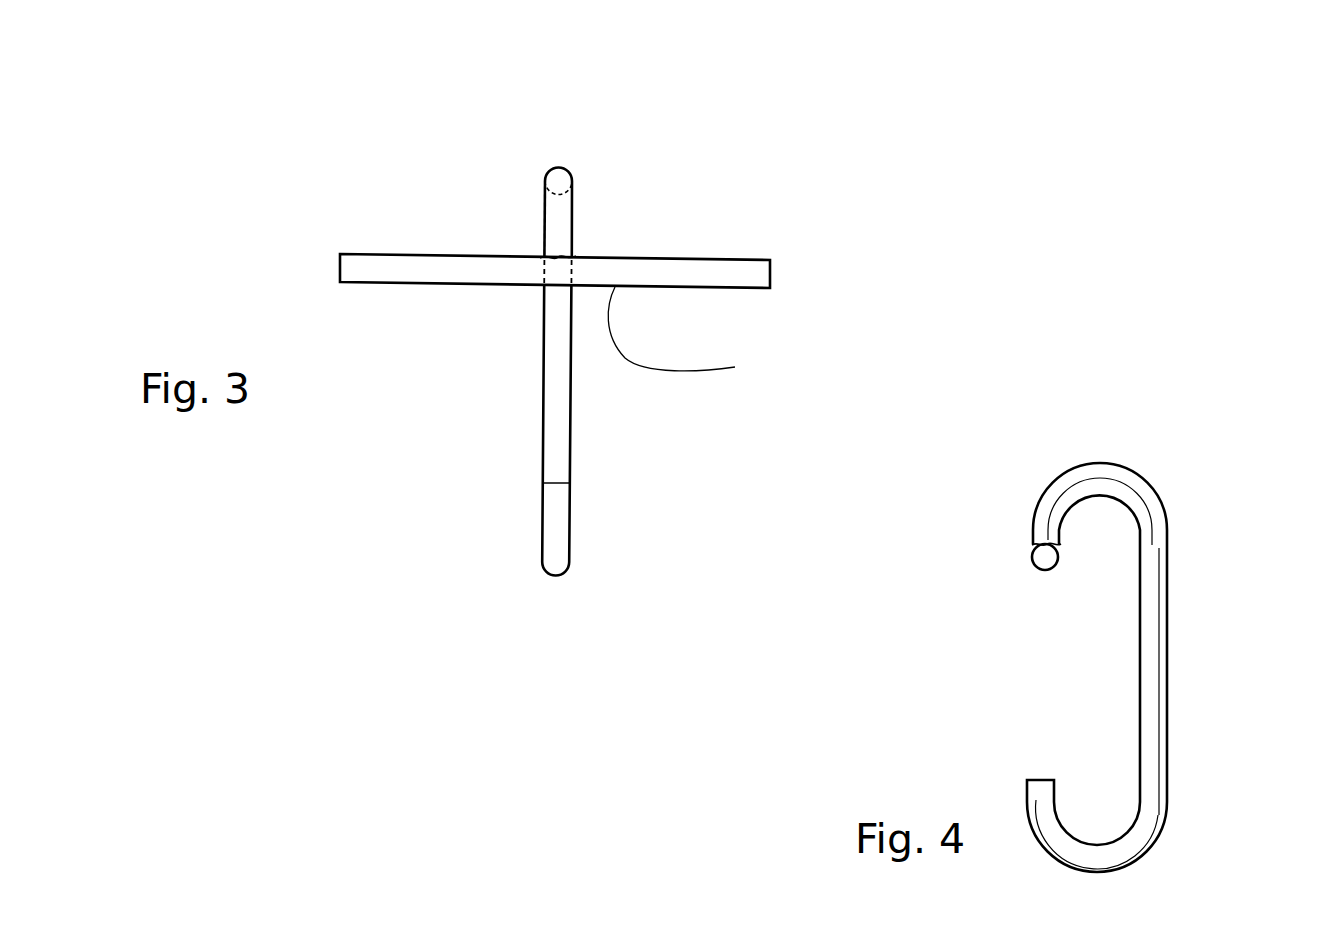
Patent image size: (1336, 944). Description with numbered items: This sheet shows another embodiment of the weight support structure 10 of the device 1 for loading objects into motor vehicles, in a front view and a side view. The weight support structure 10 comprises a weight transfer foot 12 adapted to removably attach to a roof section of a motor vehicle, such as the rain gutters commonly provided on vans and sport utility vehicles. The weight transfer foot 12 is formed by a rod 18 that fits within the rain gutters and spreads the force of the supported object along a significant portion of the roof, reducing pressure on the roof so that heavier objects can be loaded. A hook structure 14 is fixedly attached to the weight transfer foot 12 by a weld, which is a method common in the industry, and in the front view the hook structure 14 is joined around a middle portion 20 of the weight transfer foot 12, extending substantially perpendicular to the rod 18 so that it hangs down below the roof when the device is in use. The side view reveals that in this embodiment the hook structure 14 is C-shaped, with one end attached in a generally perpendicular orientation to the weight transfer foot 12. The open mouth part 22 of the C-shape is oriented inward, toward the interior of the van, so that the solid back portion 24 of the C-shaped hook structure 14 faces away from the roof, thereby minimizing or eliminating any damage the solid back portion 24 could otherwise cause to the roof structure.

In FIG. 3, the device 1 is at (341, 139).
In FIG. 3, the weight support structure 10 is at (462, 426).
In FIG. 4, the weight support structure 10 is at (1191, 729).
In FIG. 3, the weight transfer foot 12 is at (685, 334).
In FIG. 4, the weight transfer foot 12 is at (1040, 560).
In FIG. 3, the hook structure 14 is at (559, 390).
In FIG. 4, the hook structure 14 is at (1157, 577).
In FIG. 3, the rod 18 is at (742, 289).
In FIG. 3, the middle portion 20 is at (532, 262).
In FIG. 4, the open mouth part 22 is at (1004, 723).
In FIG. 4, the solid back portion 24 is at (1155, 627).
In FIG. 3, the element weld is at (566, 256).
In FIG. 4, the element weld is at (1034, 545).